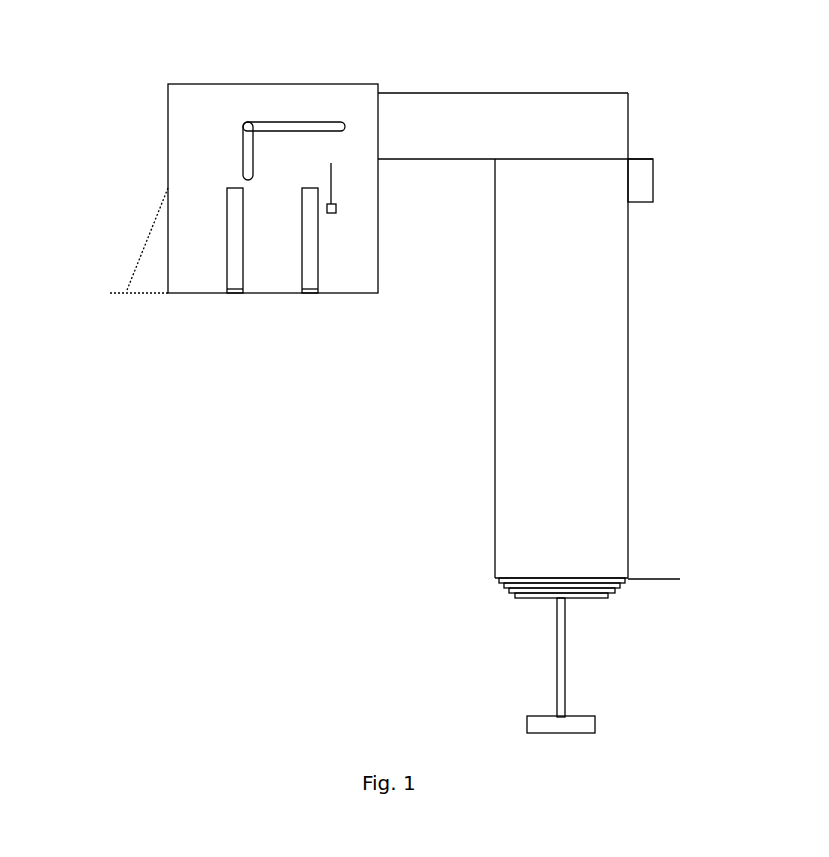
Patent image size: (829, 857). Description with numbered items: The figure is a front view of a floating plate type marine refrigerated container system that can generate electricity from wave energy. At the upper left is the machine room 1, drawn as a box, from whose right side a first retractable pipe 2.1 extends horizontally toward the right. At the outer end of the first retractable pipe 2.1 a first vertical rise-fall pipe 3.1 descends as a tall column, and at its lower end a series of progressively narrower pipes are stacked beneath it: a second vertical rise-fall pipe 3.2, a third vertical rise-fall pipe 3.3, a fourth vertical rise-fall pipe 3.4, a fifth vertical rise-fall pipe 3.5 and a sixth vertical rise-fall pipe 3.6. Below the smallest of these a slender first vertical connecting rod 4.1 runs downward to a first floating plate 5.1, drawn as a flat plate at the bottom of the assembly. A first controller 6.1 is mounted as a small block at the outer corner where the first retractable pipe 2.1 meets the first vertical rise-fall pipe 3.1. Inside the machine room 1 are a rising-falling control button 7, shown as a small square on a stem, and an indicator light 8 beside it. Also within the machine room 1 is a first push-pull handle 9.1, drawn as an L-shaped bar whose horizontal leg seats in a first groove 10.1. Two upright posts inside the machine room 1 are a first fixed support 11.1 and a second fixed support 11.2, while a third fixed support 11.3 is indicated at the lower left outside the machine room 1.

The machine room 1 is at (168, 83).
The first retractable pipe 2.1 is at (628, 93).
The first vertical rise-fall pipe 3.1 is at (628, 408).
The second vertical rise-fall pipe 3.2 is at (674, 579).
The third vertical rise-fall pipe 3.3 is at (499, 583).
The fourth vertical rise-fall pipe 3.4 is at (620, 590).
The fifth vertical rise-fall pipe 3.5 is at (510, 593).
The sixth vertical rise-fall pipe 3.6 is at (608, 600).
The first vertical connecting rod 4.1 is at (557, 657).
The first floating plate 5.1 is at (595, 722).
The first controller 6.1 is at (653, 159).
The rising-falling control button 7 is at (331, 174).
The indicator light 8 is at (337, 207).
The first push-pull handle 9.1 is at (243, 145).
The first groove 10.1 is at (288, 121).
The first fixed support 11.1 is at (318, 240).
The second fixed support 11.2 is at (228, 225).
The third fixed support 11.3 is at (145, 238).